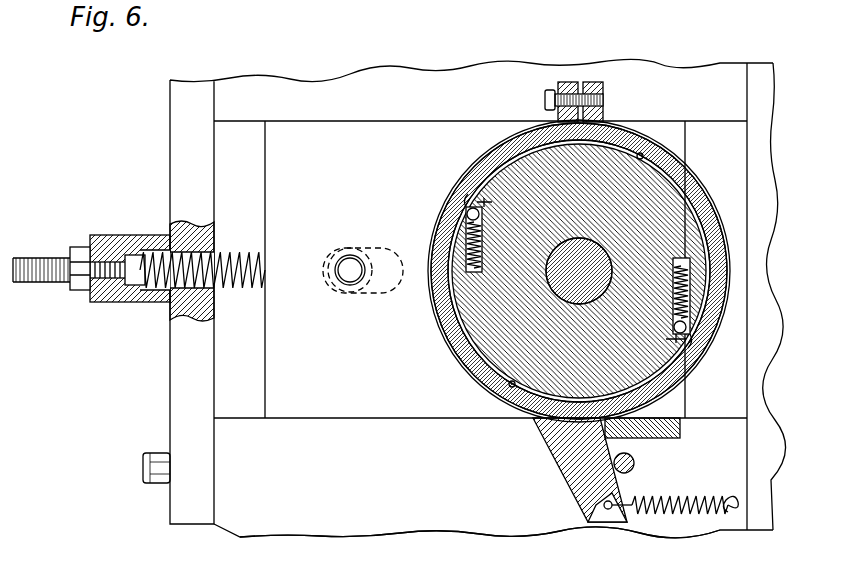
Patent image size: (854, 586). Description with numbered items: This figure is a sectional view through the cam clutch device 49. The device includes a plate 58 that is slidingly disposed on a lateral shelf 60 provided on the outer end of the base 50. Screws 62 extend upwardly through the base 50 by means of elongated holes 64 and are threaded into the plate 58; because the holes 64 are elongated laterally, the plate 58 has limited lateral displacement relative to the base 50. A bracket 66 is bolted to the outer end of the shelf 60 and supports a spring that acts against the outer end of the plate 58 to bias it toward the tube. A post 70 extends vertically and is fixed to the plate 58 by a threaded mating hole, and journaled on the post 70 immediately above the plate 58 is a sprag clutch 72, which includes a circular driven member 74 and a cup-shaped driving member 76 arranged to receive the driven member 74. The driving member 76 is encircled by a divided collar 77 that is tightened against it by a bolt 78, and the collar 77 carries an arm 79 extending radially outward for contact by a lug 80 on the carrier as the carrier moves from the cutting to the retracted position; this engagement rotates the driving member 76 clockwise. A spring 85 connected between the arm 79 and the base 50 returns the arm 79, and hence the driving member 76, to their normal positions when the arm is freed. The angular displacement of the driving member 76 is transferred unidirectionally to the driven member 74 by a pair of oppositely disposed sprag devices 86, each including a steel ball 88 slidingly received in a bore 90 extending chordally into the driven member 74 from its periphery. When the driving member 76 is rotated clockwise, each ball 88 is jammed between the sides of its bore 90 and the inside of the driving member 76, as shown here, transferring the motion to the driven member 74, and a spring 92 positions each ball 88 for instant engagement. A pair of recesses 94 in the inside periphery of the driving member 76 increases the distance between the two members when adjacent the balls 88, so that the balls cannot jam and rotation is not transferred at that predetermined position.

The cam clutch device 49 is at (487, 117).
The base 50 is at (763, 519).
The plate 58 is at (362, 410).
The lateral shelf 60 is at (387, 523).
The screws 62 is at (352, 280).
The elongated holes 64 is at (390, 292).
The bracket 66 is at (180, 372).
The post 70 is at (566, 284).
The sprag clutch 72 is at (702, 366).
The driven member 74 is at (490, 353).
The driving member 76 is at (486, 167).
The divided collar 77 is at (462, 200).
The bolt 78 is at (552, 95).
The arm 79 is at (560, 445).
The lug 80 is at (673, 436).
The spring 85 is at (683, 519).
The sprag devices 86 is at (466, 203).
The steel ball 88 is at (468, 214).
The bore 90 is at (480, 250).
The spring 92 is at (442, 260).
The recesses 94 is at (641, 153).